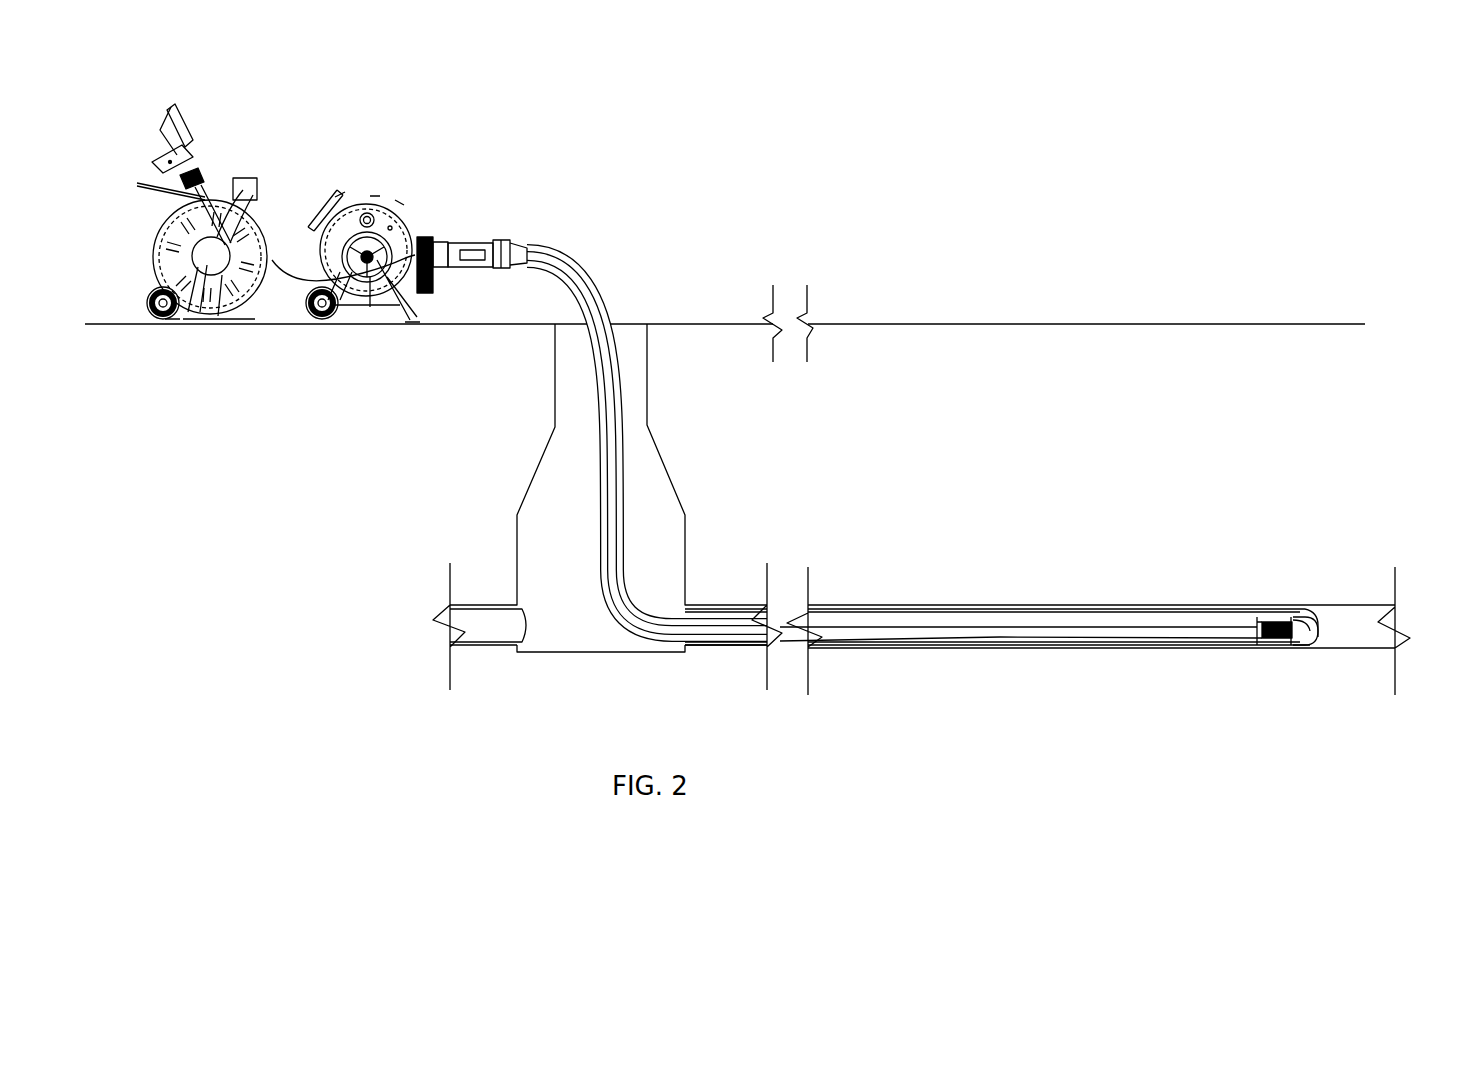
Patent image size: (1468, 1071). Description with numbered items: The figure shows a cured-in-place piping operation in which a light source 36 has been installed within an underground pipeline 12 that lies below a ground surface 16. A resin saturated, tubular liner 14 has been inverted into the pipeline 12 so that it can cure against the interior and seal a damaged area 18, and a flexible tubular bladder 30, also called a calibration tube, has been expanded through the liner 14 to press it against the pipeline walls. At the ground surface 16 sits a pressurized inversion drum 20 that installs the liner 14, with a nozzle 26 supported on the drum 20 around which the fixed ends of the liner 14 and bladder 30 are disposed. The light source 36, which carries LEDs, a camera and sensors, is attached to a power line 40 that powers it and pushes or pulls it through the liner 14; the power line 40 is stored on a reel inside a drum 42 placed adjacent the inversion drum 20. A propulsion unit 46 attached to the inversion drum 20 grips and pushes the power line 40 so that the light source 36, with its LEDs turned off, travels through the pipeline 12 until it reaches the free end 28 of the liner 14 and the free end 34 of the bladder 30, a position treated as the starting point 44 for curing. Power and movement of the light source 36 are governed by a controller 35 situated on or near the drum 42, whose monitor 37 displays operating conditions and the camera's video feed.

The pipeline 12 is at (1080, 650).
The liner 14 is at (1190, 647).
The ground surface 16 is at (888, 324).
The damaged area 18 is at (903, 608).
The pressurized inversion drum 20 is at (403, 217).
The nozzle 26 is at (508, 242).
The free end 28 is at (1307, 645).
The bladder 30 is at (1163, 608).
The free end 34 is at (1315, 628).
The controller 35 is at (193, 155).
The light source 36 is at (1277, 638).
The monitor 37 is at (180, 112).
The power line 40 is at (988, 627).
The drum 42 is at (253, 210).
The starting point 44 is at (1305, 627).
The propulsion unit 46 is at (433, 242).